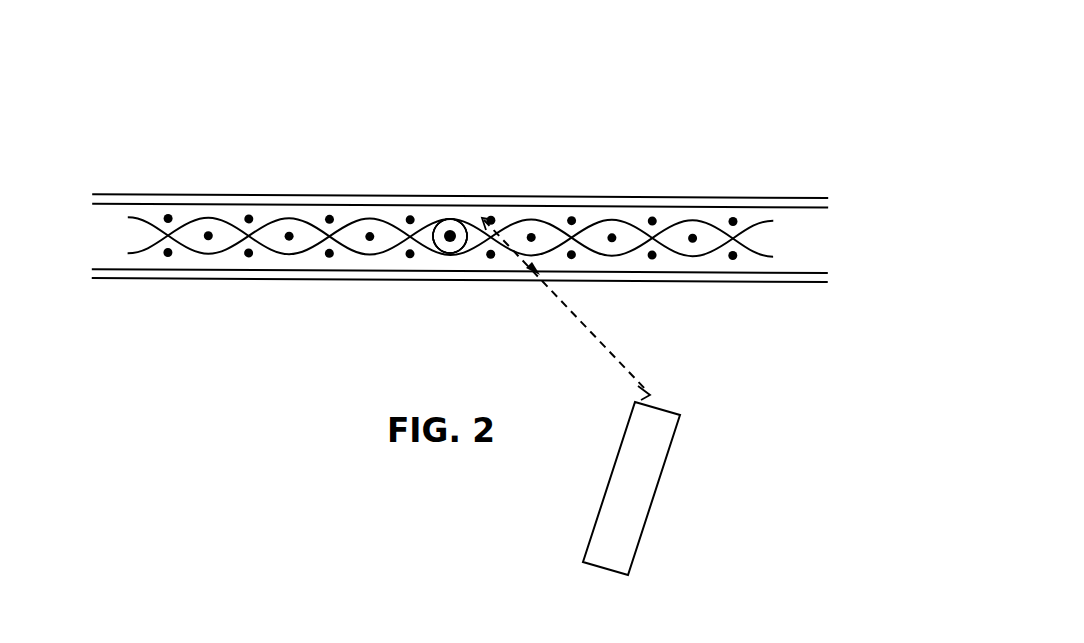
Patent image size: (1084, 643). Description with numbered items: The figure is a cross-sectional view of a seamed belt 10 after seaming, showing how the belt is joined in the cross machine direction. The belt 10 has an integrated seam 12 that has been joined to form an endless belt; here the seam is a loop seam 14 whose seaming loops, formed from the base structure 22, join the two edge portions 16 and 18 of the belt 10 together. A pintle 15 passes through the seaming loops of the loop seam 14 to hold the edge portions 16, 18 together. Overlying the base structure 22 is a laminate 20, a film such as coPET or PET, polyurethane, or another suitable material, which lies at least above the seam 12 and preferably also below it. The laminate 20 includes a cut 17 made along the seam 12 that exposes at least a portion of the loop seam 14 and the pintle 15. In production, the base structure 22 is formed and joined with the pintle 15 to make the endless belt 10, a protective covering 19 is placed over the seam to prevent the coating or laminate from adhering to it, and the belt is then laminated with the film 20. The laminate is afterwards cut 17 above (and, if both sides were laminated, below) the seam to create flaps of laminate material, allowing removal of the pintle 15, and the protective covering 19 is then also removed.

The belt 10 is at (722, 110).
The integrated seam 12 is at (388, 152).
The loop seam 14 is at (461, 222).
The pintle 15 is at (458, 251).
The edge portion 16 is at (303, 173).
The cut 17 is at (443, 223).
The edge portion 18 is at (613, 188).
The protective covering 19 is at (587, 412).
The laminate 20 is at (766, 206).
The base structure 22 is at (790, 254).